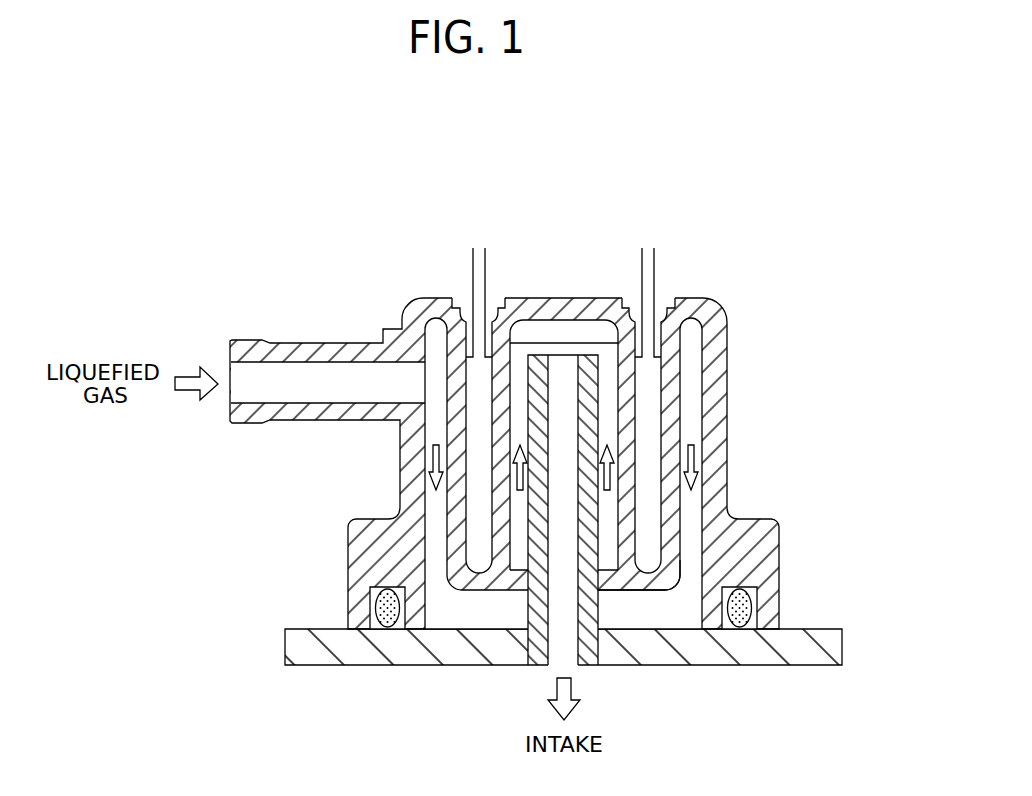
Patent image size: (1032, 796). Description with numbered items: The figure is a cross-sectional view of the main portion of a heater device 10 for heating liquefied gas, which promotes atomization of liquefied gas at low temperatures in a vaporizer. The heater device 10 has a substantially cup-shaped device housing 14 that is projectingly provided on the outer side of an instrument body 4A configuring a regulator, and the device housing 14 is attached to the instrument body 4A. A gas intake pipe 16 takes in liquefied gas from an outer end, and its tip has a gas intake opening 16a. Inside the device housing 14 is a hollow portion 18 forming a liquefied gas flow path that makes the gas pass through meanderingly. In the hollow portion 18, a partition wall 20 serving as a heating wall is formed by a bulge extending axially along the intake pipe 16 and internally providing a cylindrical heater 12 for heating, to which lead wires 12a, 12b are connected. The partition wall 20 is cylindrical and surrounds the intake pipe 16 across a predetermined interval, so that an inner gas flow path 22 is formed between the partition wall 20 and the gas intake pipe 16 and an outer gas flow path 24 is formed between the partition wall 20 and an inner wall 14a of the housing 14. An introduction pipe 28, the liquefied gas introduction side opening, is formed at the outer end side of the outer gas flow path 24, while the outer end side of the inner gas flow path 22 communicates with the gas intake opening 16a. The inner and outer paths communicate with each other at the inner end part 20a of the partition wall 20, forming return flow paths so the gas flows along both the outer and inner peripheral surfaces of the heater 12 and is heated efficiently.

The heater device 10 is at (444, 226).
The heater 12 is at (478, 417).
The lead wire 12a is at (467, 283).
The lead wire 12b is at (657, 268).
The device housing 14 is at (347, 558).
The inner wall 14a is at (705, 556).
The gas intake pipe 16 is at (590, 433).
The gas intake opening 16a is at (563, 363).
The hollow portion 18 is at (836, 348).
The partition wall 20 is at (657, 592).
The inner end of partition wall 20a is at (458, 608).
The inner gas flow path 22 is at (608, 517).
The outer gas flow path 24 is at (690, 427).
The introduction pipe 28 is at (292, 342).
The instrument body 4A is at (806, 662).